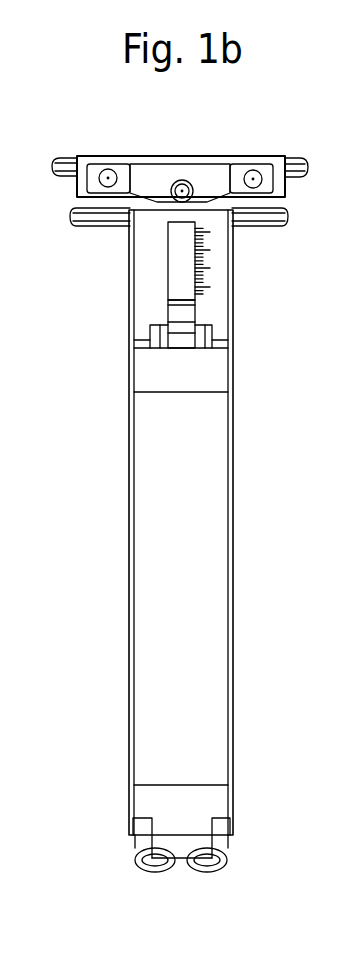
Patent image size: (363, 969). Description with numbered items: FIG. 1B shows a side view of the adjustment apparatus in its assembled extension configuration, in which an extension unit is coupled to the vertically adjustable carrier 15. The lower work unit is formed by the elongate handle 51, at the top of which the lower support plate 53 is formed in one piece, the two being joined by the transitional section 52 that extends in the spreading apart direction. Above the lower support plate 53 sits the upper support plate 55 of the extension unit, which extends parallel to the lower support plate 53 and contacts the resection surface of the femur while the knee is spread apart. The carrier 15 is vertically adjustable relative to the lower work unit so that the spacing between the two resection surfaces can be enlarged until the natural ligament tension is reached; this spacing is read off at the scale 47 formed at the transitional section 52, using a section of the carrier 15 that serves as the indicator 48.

The carrier 15 is at (207, 150).
The upper support plate 55 is at (308, 168).
The lower support plate 53 is at (288, 217).
The handle 51 is at (213, 607).
The transitional section 52 is at (213, 310).
The scale 47 is at (222, 258).
The indicator 48 is at (170, 303).